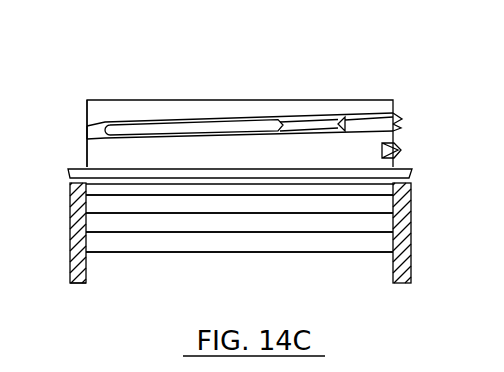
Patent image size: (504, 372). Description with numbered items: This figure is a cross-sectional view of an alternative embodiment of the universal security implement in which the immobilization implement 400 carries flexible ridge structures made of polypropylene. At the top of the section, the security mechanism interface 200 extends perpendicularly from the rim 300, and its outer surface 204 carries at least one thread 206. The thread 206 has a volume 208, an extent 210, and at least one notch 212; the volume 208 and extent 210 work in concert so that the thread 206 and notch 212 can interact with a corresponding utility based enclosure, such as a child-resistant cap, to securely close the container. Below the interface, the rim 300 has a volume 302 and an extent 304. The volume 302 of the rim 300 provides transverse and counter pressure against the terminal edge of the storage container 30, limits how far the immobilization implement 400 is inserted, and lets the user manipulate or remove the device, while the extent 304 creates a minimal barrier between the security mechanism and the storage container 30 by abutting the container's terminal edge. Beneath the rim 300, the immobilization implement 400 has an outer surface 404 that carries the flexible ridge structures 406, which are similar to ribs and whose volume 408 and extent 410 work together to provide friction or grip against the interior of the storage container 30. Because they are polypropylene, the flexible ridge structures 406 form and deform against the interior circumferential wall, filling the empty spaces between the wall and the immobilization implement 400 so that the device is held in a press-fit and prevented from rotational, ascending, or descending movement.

The storage container 30 is at (68, 265).
The security mechanism interface 200 is at (261, 94).
The outer surface 204 is at (86, 154).
The thread 206 is at (162, 132).
The volume 208 is at (438, 137).
The extent 210 is at (438, 164).
The notch 212 is at (328, 117).
The rim 300 is at (80, 165).
The volume 302 is at (31, 200).
The extent 304 is at (416, 200).
The immobilization implement 400 is at (84, 210).
The outer surface 404 is at (171, 190).
The flexible ridge structures 406 is at (87, 219).
The volume 408 is at (416, 246).
The extent 410 is at (416, 271).